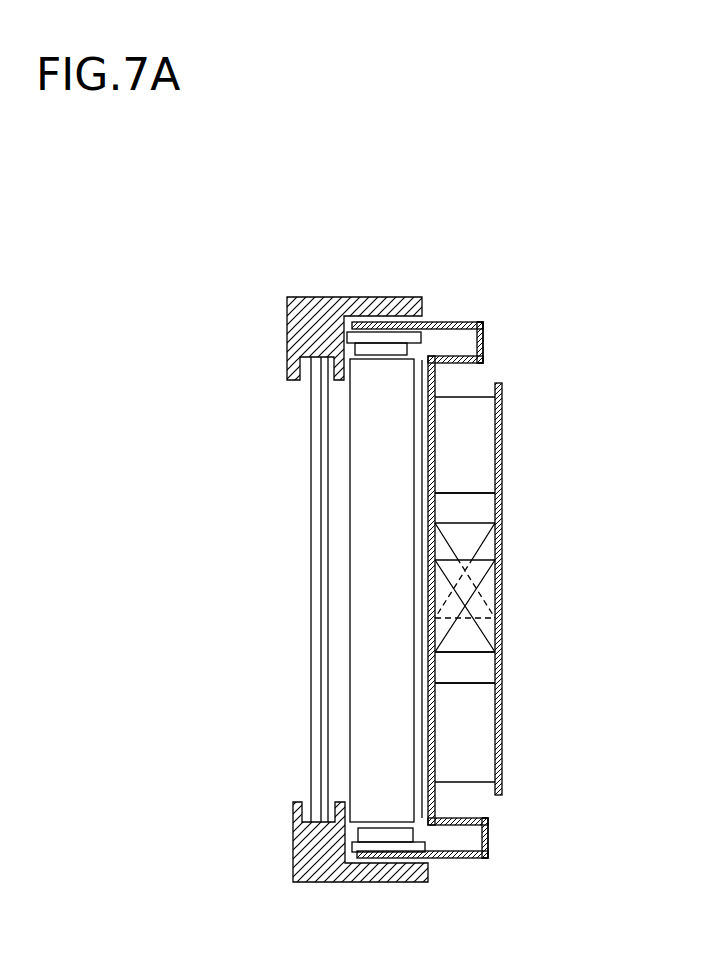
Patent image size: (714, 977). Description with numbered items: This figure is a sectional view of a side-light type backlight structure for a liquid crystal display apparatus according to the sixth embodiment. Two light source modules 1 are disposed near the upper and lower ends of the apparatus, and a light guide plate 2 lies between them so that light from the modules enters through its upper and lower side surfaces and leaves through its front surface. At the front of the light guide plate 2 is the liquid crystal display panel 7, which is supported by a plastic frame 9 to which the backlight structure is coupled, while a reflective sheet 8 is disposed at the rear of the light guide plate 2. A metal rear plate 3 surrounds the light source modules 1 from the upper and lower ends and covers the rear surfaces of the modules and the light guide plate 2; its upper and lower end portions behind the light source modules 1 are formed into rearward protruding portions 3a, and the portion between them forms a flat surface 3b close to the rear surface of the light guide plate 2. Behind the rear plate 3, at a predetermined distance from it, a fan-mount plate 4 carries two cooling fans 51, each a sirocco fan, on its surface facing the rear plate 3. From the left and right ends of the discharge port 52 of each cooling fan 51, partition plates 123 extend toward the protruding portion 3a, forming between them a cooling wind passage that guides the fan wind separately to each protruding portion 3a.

The light source module 1 is at (385, 350).
The light guide plate 2 is at (385, 584).
The rear plate 3 is at (456, 324).
The protruding portion 3a is at (483, 332).
The flat surface 3b is at (433, 418).
The fan-mount plate 4 is at (500, 590).
The liquid crystal display panel 7 is at (315, 638).
The reflective sheet 8 is at (423, 523).
The plastic frame 9 is at (317, 862).
The cooling fan 51 is at (475, 535).
The discharge port 52 is at (475, 502).
The partition plate 123 is at (475, 456).